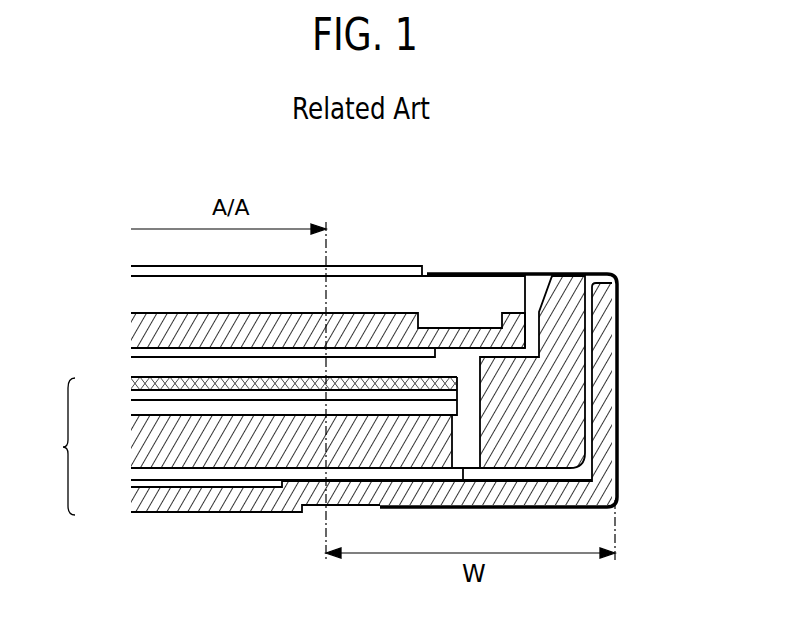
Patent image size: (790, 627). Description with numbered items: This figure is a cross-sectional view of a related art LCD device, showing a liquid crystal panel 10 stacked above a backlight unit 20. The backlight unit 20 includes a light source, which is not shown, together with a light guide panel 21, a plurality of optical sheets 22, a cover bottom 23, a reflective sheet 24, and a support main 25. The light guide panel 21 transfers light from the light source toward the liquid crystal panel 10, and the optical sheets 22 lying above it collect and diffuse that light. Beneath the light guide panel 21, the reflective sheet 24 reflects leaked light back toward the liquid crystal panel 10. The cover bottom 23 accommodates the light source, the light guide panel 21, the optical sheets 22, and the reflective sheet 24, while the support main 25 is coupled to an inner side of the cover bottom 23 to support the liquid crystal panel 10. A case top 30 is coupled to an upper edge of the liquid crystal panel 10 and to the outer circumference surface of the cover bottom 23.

The liquid crystal panel 10 is at (157, 332).
The backlight unit 20 is at (53, 446).
The light guide panel 21 is at (157, 436).
The optical sheets 22 is at (135, 385).
The cover bottom 23 is at (157, 500).
The reflective sheet 24 is at (157, 475).
The support main 25 is at (553, 404).
The case top 30 is at (617, 330).